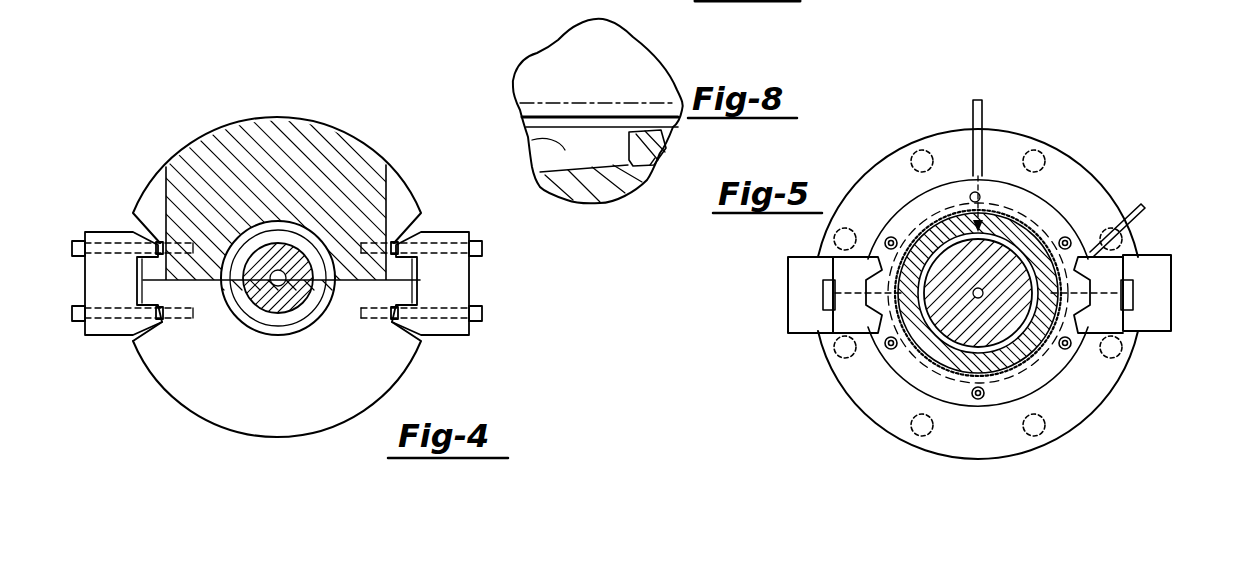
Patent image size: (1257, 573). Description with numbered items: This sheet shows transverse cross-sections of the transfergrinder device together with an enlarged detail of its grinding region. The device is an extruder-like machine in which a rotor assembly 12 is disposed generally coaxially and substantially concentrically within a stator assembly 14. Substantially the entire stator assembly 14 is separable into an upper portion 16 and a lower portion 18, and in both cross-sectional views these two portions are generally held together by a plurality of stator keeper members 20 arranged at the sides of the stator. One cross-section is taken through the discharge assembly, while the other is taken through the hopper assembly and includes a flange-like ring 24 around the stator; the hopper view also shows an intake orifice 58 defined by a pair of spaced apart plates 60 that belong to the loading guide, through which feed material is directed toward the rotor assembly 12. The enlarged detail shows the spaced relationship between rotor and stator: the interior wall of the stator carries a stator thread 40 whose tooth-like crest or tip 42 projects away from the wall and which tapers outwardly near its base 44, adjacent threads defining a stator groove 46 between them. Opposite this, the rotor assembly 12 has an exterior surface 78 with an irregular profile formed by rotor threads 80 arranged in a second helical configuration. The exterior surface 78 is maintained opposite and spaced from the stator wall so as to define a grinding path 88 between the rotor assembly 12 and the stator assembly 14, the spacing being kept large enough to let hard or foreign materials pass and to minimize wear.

In FIG. 4, the rotor assembly 12 is at (266, 252).
In FIG. 5, the rotor assembly 12 is at (982, 290).
In FIG. 4, the stator assembly 14 is at (188, 180).
In FIG. 4, the upper portion 16 is at (428, 204).
In FIG. 5, the upper portion 16 is at (1170, 232).
In FIG. 4, the lower portion 18 is at (425, 362).
In FIG. 5, the lower portion 18 is at (1143, 400).
In FIG. 4, the stator keeper members 20 is at (455, 284).
In FIG. 5, the stator keeper members 20 is at (802, 318).
In FIG. 5, the flange ring 24 is at (1046, 122).
In FIG. 8, the stator thread 40 is at (662, 148).
In FIG. 8, the crest or tip 42 is at (655, 158).
In FIG. 8, the base 44 is at (637, 163).
In FIG. 8, the stator groove 46 is at (532, 140).
In FIG. 5, the intake orifice 58 is at (1027, 228).
In FIG. 5, the spaced apart plates 60 is at (985, 111).
In FIG. 4, the exterior surface 78 is at (300, 243).
In FIG. 8, the rotor threads 80 is at (580, 113).
In FIG. 8, the grinding path 88 is at (680, 128).